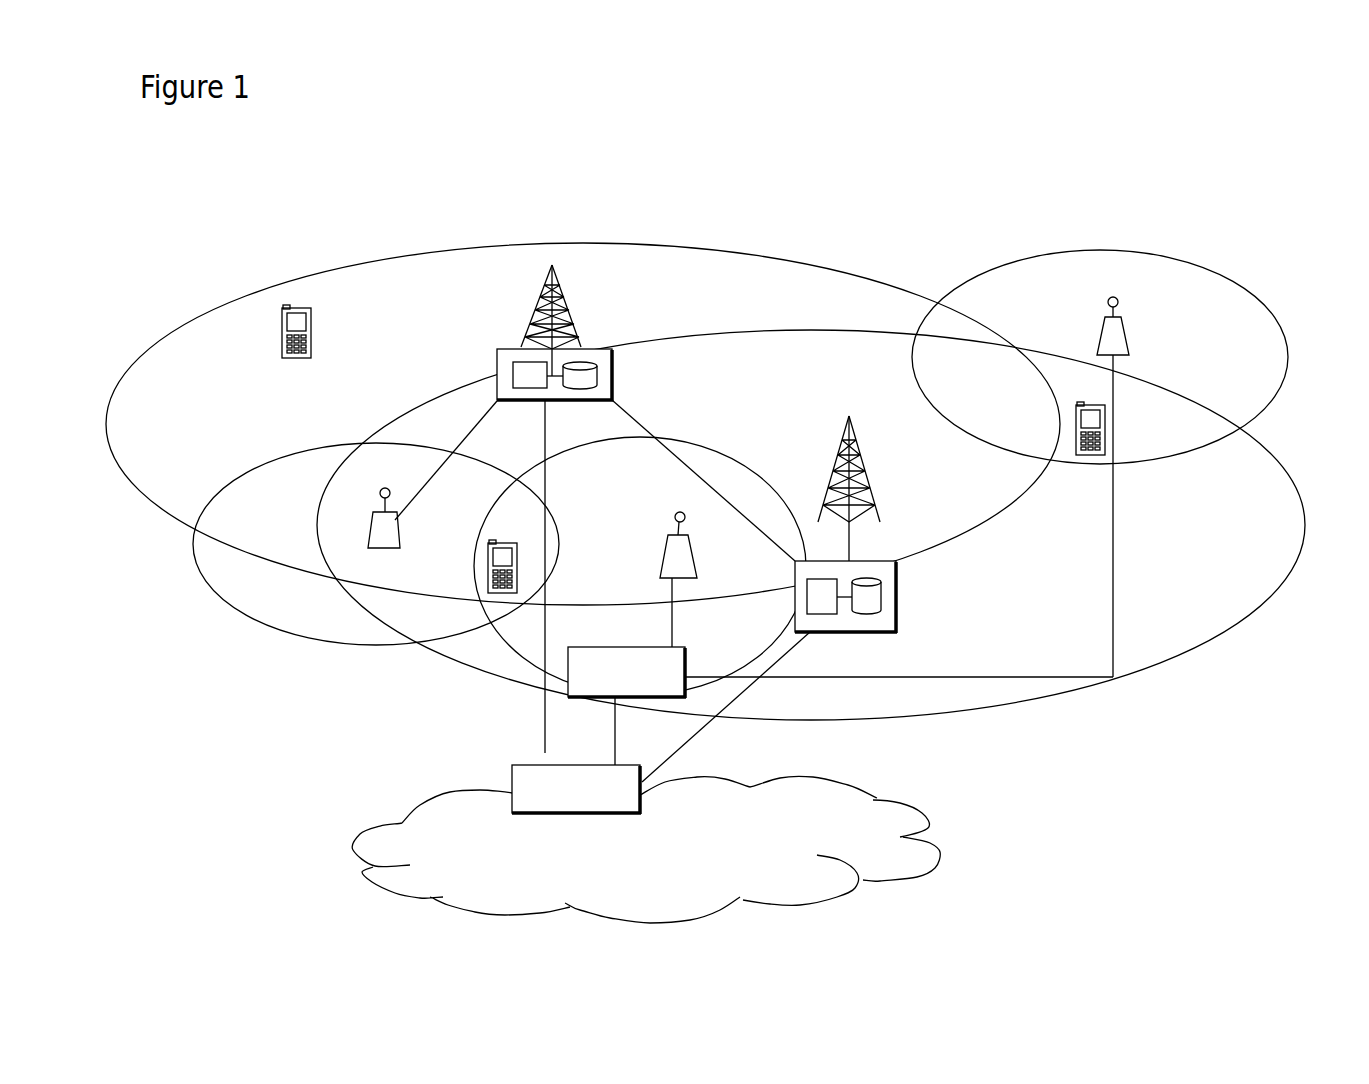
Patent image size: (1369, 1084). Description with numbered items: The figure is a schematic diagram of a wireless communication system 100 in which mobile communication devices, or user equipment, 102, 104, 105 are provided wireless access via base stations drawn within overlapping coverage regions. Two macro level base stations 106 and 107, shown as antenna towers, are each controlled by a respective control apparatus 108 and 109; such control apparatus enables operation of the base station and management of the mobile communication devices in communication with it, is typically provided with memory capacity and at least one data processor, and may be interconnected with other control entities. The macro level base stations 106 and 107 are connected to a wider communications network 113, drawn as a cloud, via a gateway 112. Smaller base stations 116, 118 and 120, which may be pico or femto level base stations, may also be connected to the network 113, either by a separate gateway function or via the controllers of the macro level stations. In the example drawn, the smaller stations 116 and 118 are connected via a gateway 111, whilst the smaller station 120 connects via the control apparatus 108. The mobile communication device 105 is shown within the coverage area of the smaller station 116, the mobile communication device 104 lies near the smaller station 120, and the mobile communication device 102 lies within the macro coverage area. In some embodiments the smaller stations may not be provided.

The wireless communication system 100 is at (200, 290).
The mobile communication device 102 is at (277, 350).
The mobile communication device 104 is at (487, 570).
The mobile communication device 105 is at (1092, 460).
The macro level base station 106 is at (533, 313).
The macro level base station 107 is at (875, 488).
The control apparatus 108 is at (497, 366).
The control apparatus 109 is at (896, 622).
The gateway 111 is at (577, 677).
The gateway 112 is at (513, 765).
The wider communications network 113 is at (433, 823).
The smaller base station 116 is at (1100, 330).
The smaller base station 118 is at (680, 562).
The smaller base station 120 is at (375, 522).